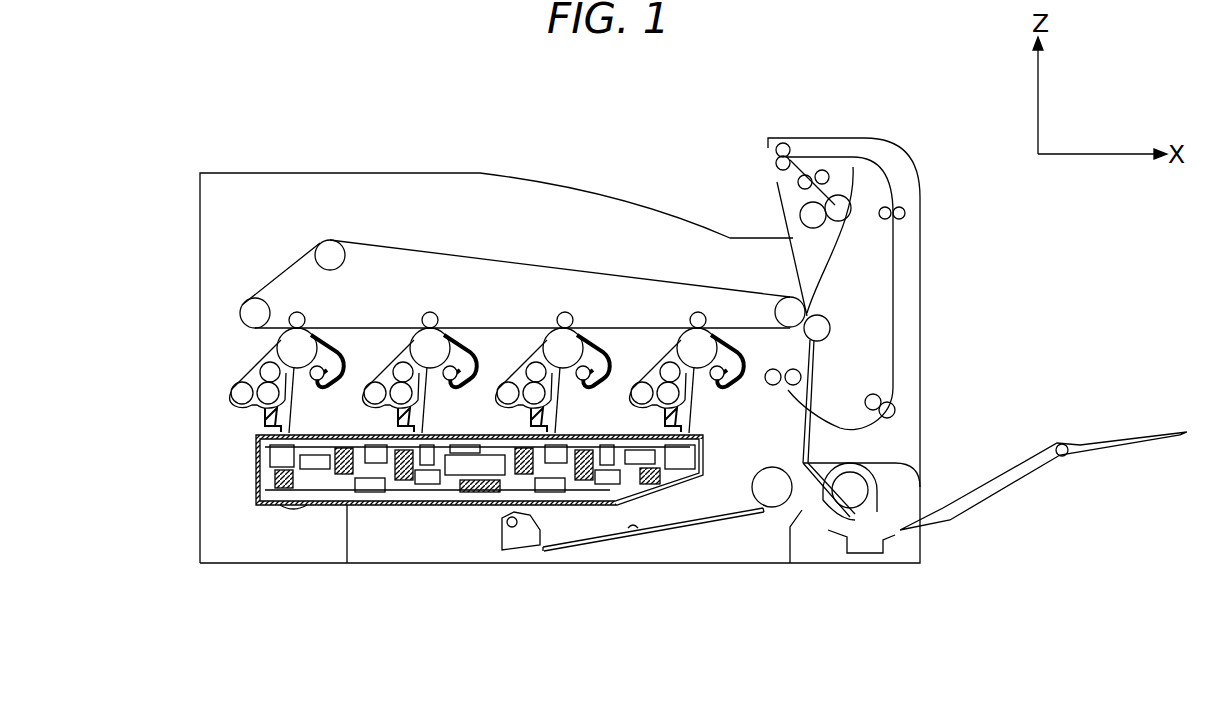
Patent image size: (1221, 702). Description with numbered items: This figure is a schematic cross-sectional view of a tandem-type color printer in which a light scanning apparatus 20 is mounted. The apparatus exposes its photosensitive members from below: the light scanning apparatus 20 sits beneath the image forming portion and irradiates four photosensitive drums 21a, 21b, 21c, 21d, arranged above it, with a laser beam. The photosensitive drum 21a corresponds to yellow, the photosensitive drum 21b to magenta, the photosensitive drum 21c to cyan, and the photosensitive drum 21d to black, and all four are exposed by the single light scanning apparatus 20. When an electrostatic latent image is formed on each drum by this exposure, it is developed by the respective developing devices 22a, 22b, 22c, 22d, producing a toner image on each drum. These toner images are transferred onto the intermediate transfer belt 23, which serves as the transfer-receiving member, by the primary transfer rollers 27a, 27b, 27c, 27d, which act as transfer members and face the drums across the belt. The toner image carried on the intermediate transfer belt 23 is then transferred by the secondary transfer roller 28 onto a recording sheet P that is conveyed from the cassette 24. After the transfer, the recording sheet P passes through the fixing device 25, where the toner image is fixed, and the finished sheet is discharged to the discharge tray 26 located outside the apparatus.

The light scanning apparatus 20 is at (257, 488).
The photosensitive drum 21a is at (280, 342).
The photosensitive drum 21b is at (441, 338).
The photosensitive drum 21c is at (573, 333).
The photosensitive drum 21d is at (710, 340).
The developing device 22a is at (232, 408).
The developing device 22b is at (366, 406).
The developing device 22c is at (499, 406).
The developing device 22d is at (633, 406).
The intermediate transfer belt 23 is at (292, 262).
The cassette 24 is at (773, 548).
The fixing device 25 is at (842, 196).
The discharge tray 26 is at (680, 213).
The primary transfer roller 27a is at (337, 300).
The primary transfer roller 27b is at (426, 313).
The primary transfer roller 27c is at (560, 315).
The primary transfer roller 27d is at (692, 313).
The secondary transfer roller 28 is at (828, 322).
The recording sheet P is at (627, 540).